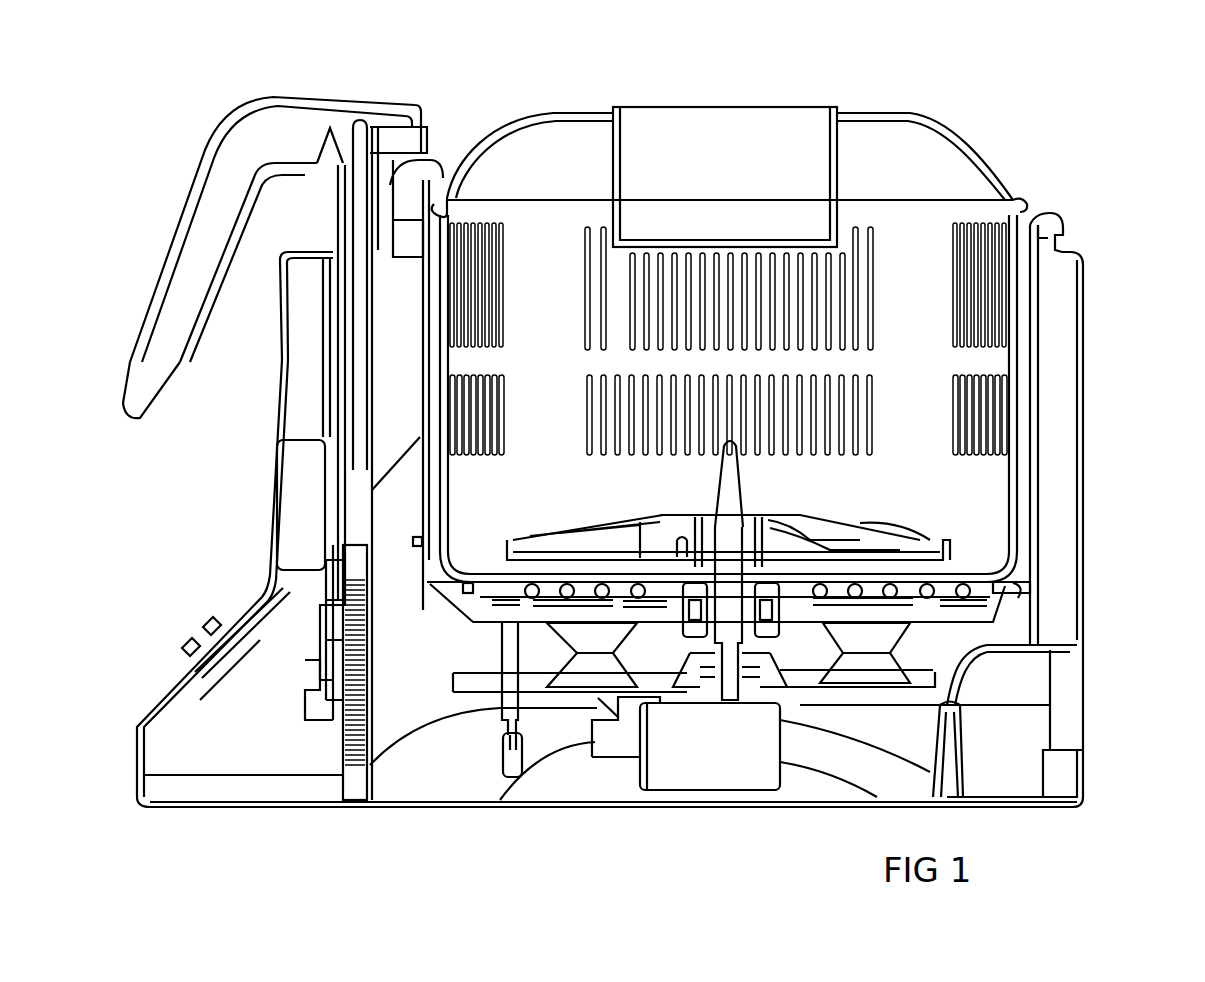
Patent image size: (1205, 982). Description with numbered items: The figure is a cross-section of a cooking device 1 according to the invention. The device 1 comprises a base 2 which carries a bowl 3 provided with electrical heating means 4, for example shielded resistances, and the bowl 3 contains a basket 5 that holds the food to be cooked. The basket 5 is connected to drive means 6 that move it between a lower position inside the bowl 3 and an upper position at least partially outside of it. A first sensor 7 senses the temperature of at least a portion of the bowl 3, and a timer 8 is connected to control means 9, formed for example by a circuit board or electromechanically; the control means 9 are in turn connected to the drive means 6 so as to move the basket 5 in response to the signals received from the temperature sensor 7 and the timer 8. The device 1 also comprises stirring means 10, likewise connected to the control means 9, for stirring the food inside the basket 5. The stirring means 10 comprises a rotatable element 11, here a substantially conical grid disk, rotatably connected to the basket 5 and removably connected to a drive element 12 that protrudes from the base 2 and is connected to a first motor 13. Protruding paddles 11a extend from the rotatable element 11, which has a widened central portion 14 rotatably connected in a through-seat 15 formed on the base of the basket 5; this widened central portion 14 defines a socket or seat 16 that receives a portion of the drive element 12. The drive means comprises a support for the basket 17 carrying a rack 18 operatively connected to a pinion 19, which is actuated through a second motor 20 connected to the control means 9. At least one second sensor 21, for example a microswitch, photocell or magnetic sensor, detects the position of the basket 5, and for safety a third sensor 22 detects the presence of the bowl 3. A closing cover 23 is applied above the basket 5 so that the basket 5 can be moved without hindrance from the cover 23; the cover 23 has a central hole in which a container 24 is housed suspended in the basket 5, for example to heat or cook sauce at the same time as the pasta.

The cooking device 1 is at (1015, 130).
The base 2 is at (254, 808).
The bowl 3 is at (1062, 222).
The electrical heating means 4 is at (600, 584).
The basket 5 is at (1018, 200).
The drive means 6 is at (298, 626).
The first sensor 7 is at (418, 546).
The timer 8 is at (151, 730).
The control means 9 is at (196, 683).
The stirring means 10 is at (698, 493).
The rotatable element 11 is at (930, 540).
The protruding paddles 11a is at (727, 443).
The drive element 12 is at (728, 615).
The first motor 13 is at (710, 777).
The widened central portion 14 is at (765, 537).
The through-seat 15 is at (762, 548).
The seat 16 is at (742, 523).
The support for the basket 17 is at (375, 112).
The rack 18 is at (350, 731).
The pinion 19 is at (358, 557).
The second motor 20 is at (290, 497).
The second sensor 21 is at (390, 203).
The third sensor 22 is at (1003, 594).
The closing cover 23 is at (918, 117).
The container 24 is at (670, 137).